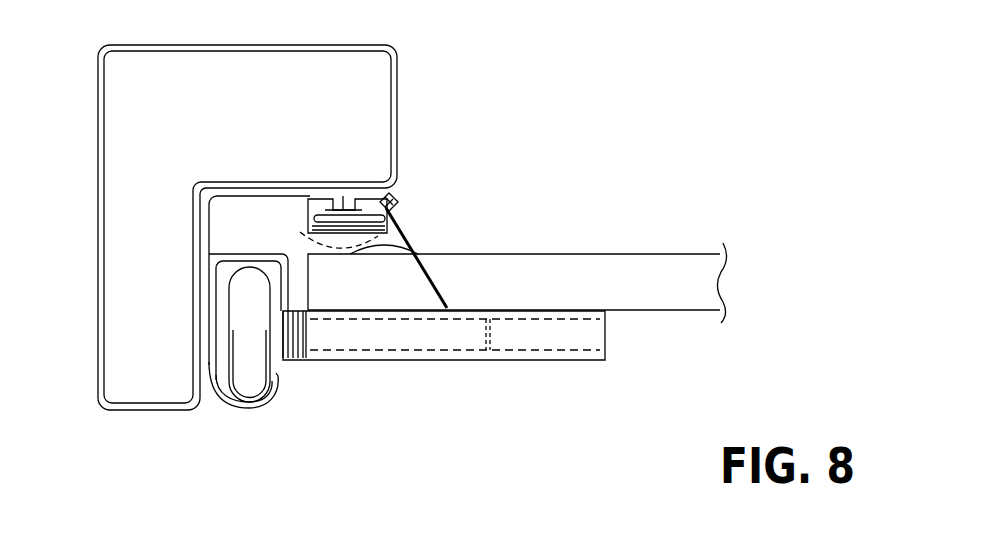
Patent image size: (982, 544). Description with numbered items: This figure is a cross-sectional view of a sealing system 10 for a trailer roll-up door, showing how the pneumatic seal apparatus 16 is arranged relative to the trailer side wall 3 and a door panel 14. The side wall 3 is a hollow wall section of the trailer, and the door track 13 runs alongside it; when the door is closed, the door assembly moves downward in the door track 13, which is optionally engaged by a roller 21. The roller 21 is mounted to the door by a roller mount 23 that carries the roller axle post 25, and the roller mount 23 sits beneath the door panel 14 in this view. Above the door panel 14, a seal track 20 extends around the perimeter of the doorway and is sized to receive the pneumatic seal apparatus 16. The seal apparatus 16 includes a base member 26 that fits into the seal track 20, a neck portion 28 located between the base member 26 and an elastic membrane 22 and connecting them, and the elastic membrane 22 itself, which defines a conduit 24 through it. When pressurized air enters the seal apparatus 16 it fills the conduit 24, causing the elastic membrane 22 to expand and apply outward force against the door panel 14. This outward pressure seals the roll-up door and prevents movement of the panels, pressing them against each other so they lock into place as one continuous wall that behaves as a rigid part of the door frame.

The side wall 3 is at (98, 174).
The window assembly 10 is at (565, 132).
The door track 13 is at (247, 410).
The door panel 14 is at (553, 262).
The pneumatic seal apparatus 16 is at (292, 212).
The seal track 20 is at (300, 205).
The roller 21 is at (276, 364).
The elastic membrane 22 is at (400, 212).
The roller mount 23 is at (543, 362).
The conduit 24 is at (312, 220).
The roller axle post 25 is at (583, 351).
The base member 26 is at (397, 191).
The neck portion 28 is at (343, 203).